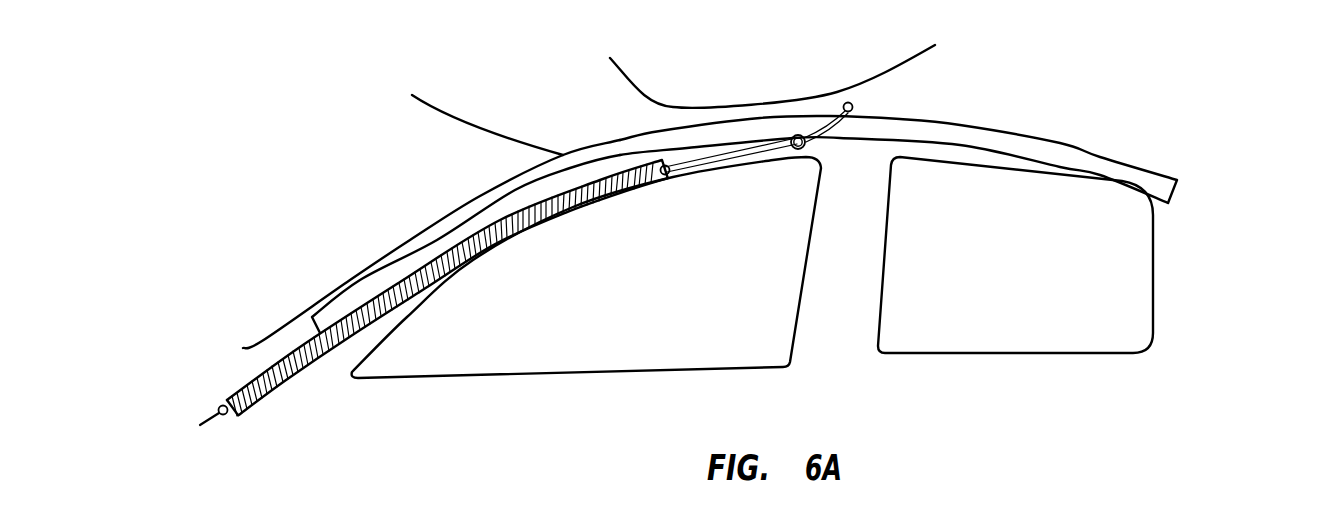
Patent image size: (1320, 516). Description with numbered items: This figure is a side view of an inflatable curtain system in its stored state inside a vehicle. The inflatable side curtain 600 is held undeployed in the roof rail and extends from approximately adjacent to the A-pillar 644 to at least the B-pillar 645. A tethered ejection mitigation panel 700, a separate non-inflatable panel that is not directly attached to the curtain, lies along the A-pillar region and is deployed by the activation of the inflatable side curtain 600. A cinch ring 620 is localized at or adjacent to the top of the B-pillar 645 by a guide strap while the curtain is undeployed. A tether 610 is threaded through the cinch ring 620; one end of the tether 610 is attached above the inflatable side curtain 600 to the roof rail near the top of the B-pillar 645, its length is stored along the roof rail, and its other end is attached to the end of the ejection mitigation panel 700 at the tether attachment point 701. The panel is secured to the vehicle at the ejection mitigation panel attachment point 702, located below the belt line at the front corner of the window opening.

The inflatable side curtain 600 is at (1072, 143).
The tether 610 is at (723, 148).
The cinch ring 620 is at (789, 151).
The A-pillar 644 is at (288, 332).
The B-pillar 645 is at (868, 207).
The ejection mitigation panel 700 is at (307, 378).
The tether attachment point 701 is at (652, 165).
The ejection mitigation panel attachment point 702 is at (214, 417).